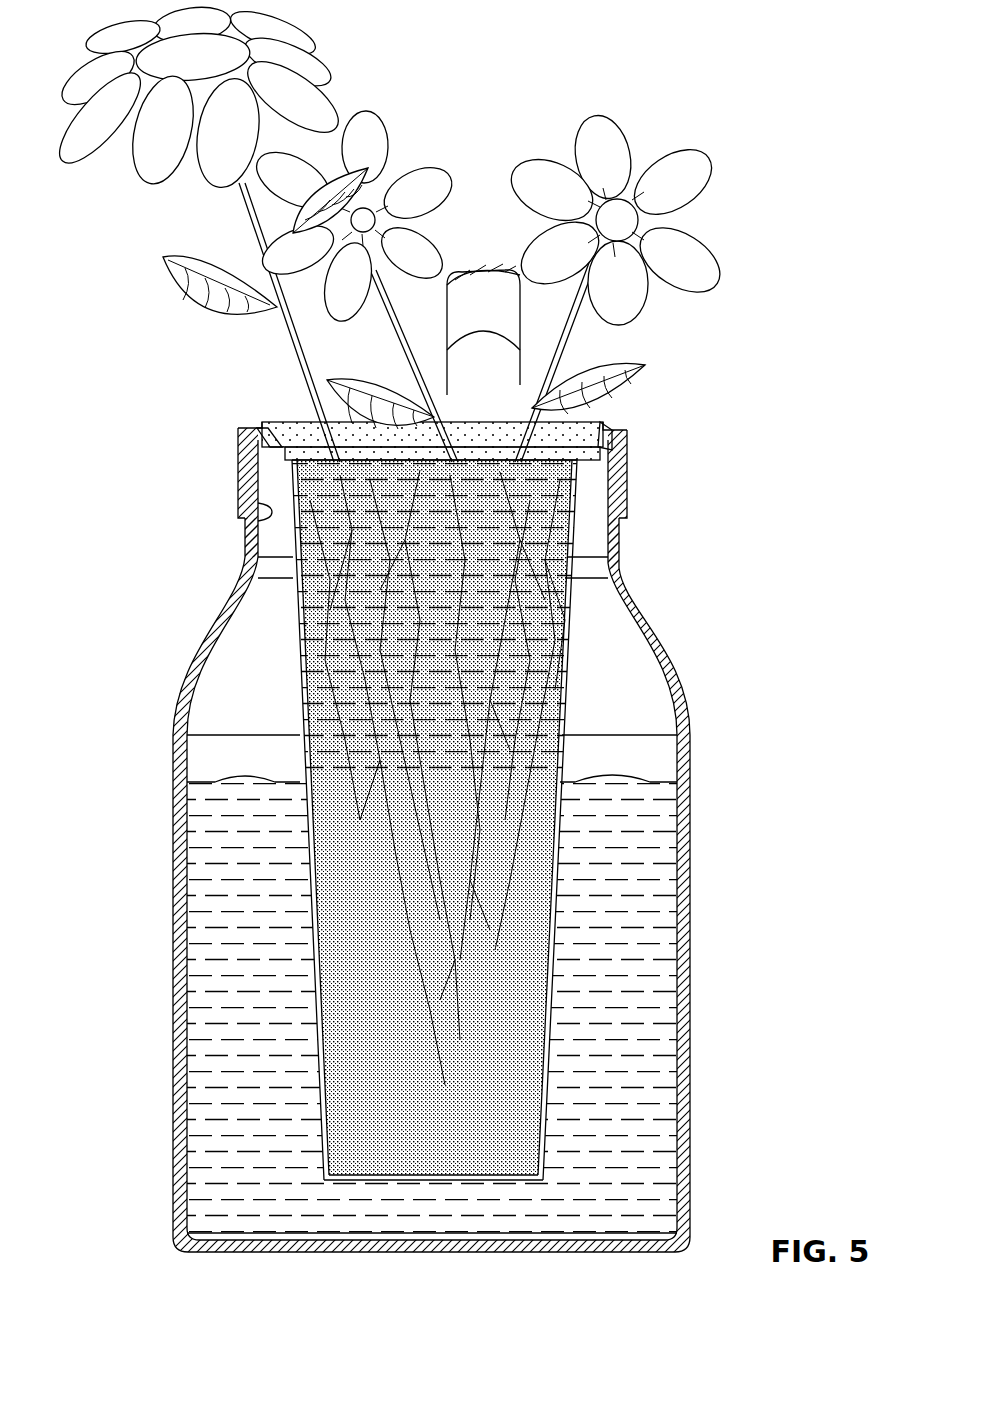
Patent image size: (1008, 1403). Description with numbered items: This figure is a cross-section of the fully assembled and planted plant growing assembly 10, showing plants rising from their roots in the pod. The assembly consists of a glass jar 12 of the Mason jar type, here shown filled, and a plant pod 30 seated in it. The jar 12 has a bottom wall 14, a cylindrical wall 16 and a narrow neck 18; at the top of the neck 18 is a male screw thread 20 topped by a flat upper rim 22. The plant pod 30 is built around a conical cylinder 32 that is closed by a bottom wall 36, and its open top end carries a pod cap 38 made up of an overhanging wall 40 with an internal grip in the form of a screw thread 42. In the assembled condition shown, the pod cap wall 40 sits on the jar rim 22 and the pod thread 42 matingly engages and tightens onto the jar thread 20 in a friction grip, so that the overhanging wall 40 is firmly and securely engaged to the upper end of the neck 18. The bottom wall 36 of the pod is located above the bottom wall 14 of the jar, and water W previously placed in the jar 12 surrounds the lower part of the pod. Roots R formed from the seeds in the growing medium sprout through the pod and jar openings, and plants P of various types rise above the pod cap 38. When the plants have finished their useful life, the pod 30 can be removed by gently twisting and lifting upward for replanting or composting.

The plant growing assembly 10 is at (473, 847).
The glass jar 12 is at (469, 864).
The bottom wall 14 is at (620, 1250).
The cylindrical wall 16 is at (687, 978).
The narrow neck 18 is at (613, 552).
The male screw thread 20 is at (430, 478).
The flat upper rim 22 is at (605, 425).
The plant pod 30 is at (521, 883).
The conical cylinder 32 is at (553, 885).
The bottom wall 36 is at (462, 1182).
The pod cap 38 is at (262, 425).
The overhanging wall 40 is at (238, 488).
The screw thread 42 is at (265, 512).
The roots R is at (563, 643).
The water W is at (650, 838).
The plants P is at (708, 223).